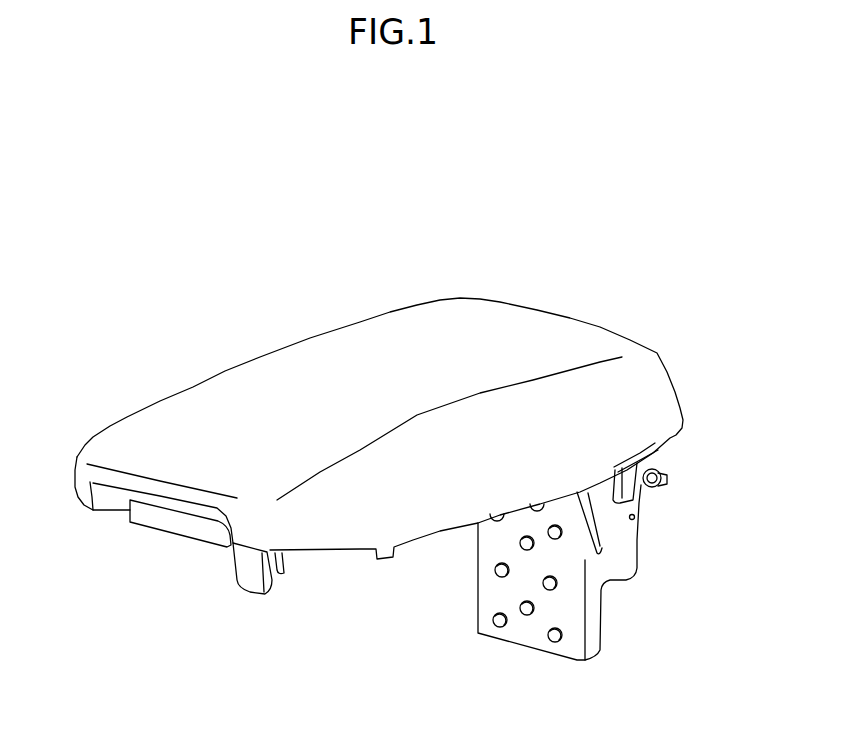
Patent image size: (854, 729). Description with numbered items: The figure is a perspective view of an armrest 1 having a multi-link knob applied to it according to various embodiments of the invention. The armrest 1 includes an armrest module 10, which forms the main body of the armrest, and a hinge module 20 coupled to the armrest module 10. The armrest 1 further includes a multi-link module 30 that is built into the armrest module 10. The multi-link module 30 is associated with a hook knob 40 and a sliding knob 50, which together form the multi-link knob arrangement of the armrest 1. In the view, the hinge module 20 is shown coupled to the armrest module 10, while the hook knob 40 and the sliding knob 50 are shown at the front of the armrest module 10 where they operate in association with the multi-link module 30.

The armrest 1 is at (625, 286).
The armrest module 10 is at (428, 338).
The hinge module 20 is at (565, 607).
The multi-link module 30 is at (140, 693).
The hook knob 40 is at (253, 582).
The sliding knob 50 is at (183, 527).